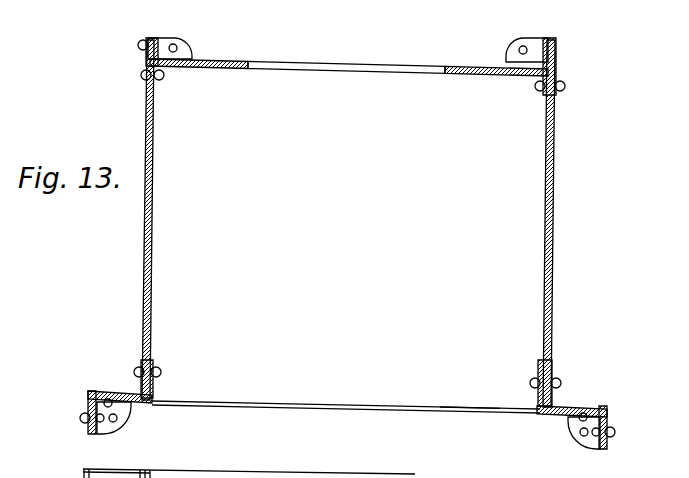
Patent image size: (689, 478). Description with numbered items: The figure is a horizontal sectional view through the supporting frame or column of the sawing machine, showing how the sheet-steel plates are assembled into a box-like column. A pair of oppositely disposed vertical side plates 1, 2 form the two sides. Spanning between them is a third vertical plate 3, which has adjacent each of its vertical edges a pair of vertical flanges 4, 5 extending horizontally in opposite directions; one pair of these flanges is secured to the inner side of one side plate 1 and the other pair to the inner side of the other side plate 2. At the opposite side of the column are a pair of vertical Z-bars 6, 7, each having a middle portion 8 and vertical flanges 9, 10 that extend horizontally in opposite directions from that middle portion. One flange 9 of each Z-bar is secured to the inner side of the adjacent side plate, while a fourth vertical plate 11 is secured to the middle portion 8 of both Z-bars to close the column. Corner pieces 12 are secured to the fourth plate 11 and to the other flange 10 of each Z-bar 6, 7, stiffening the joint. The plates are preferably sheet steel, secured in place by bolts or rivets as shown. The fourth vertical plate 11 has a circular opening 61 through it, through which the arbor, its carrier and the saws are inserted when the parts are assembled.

The vertical side plate 1 is at (151, 272).
The vertical side plate 2 is at (549, 222).
The third vertical plate 3 is at (224, 67).
The vertical flange 4 is at (152, 46).
The vertical flange 5 is at (152, 79).
The vertical Z-bar 6 is at (154, 367).
The vertical Z-bar 7 is at (559, 405).
The middle portion 8 is at (148, 395).
The vertical flange 9 is at (162, 391).
The vertical flange 10 is at (83, 422).
The fourth vertical plate 11 is at (153, 403).
The corner piece 12 is at (116, 433).
The circular opening 61 is at (462, 411).